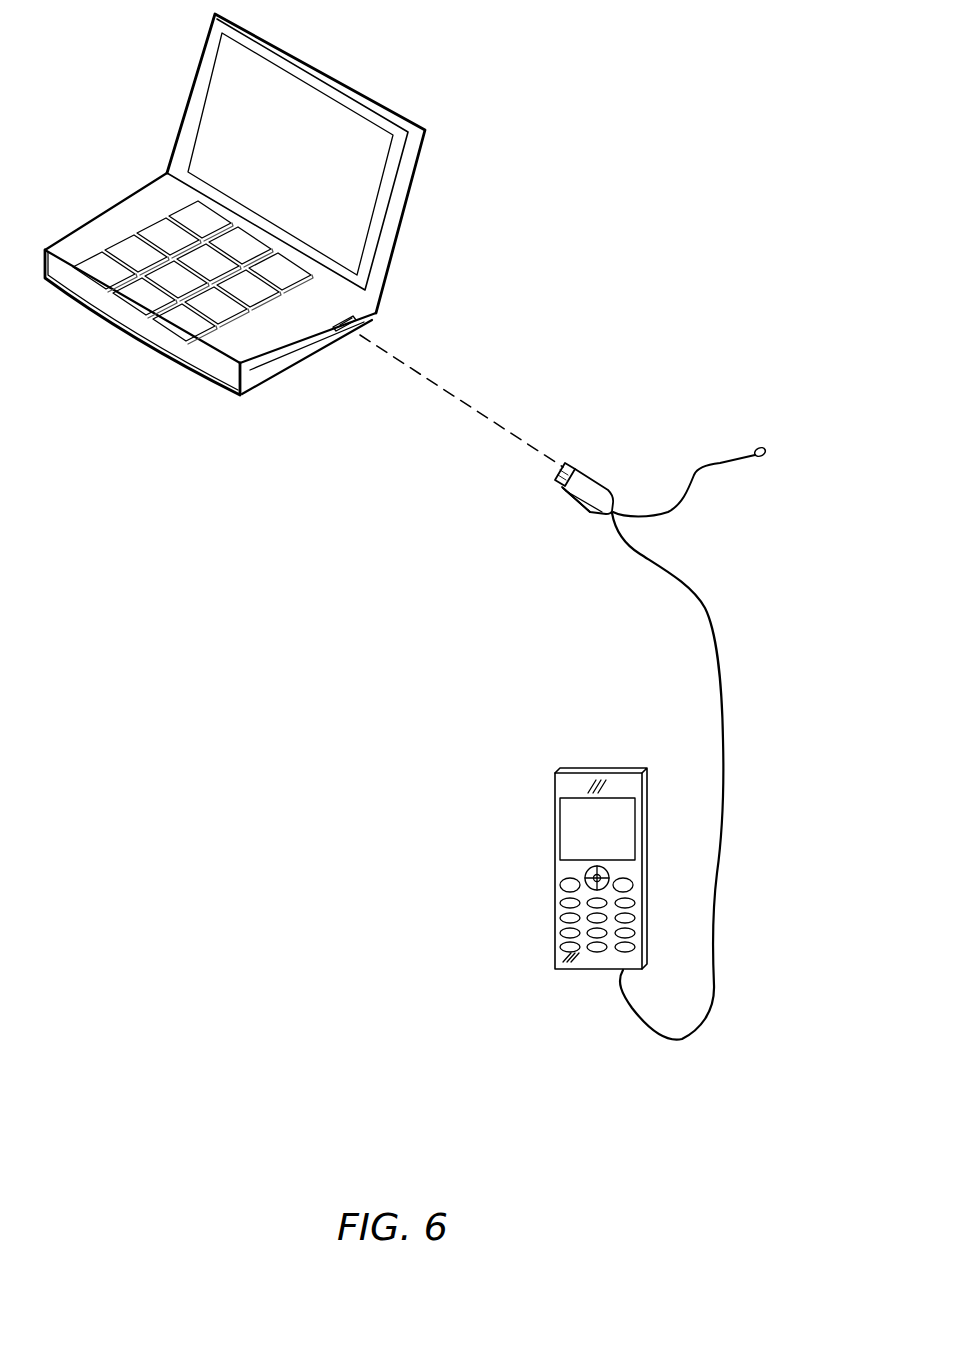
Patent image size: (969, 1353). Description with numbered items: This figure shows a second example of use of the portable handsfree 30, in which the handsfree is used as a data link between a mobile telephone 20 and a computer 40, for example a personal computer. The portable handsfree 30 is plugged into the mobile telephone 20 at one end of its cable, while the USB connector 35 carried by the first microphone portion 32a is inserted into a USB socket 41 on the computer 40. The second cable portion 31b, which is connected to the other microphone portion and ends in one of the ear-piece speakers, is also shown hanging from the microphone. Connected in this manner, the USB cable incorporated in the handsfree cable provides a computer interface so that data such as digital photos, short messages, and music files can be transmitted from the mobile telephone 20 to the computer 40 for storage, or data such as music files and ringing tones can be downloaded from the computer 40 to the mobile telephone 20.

The mobile telephone 20 is at (555, 785).
The portable handsfree 30 is at (722, 646).
The second cable portion 31b is at (697, 465).
The first microphone portion 32a is at (570, 500).
The USB connector 35 is at (573, 458).
The computer 40 is at (360, 87).
The USB socket 41 is at (375, 311).